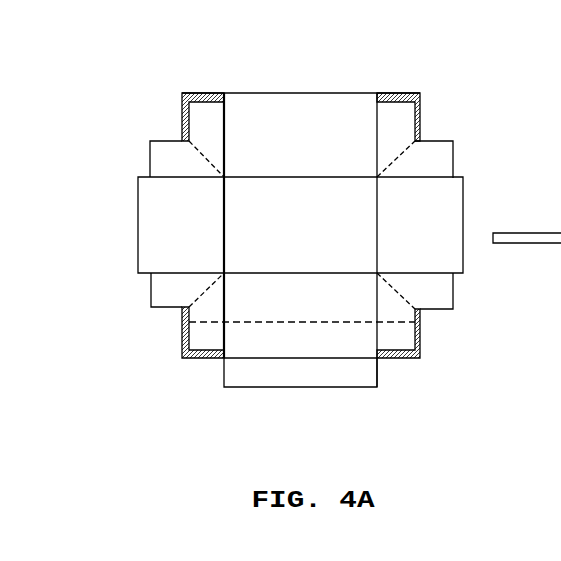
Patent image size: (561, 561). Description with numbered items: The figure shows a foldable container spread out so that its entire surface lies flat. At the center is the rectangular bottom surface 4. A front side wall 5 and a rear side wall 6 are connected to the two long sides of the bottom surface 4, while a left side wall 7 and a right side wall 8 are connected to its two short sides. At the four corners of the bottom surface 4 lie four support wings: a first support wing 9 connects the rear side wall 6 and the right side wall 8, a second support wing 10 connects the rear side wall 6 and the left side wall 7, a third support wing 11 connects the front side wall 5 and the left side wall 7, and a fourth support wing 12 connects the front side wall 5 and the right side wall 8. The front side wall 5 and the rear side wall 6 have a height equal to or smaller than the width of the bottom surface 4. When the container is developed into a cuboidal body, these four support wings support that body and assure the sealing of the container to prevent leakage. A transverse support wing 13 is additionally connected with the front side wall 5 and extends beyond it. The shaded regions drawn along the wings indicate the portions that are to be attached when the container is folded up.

The bottom surface 4 is at (327, 230).
The front side wall 5 is at (278, 342).
The rear side wall 6 is at (305, 128).
The left side wall 7 is at (170, 225).
The right side wall 8 is at (453, 212).
The first support wing 9 is at (440, 153).
The second support wing 10 is at (207, 140).
The third support wing 11 is at (183, 290).
The fourth support wing 12 is at (428, 298).
The transverse support wing 13 is at (345, 374).